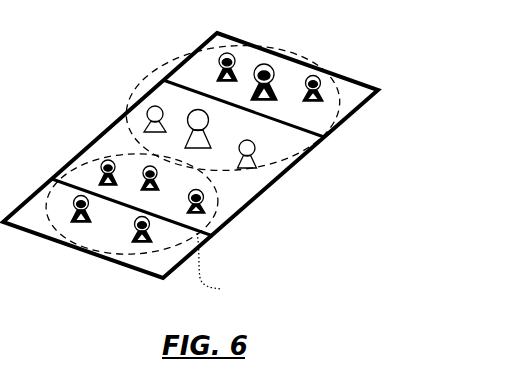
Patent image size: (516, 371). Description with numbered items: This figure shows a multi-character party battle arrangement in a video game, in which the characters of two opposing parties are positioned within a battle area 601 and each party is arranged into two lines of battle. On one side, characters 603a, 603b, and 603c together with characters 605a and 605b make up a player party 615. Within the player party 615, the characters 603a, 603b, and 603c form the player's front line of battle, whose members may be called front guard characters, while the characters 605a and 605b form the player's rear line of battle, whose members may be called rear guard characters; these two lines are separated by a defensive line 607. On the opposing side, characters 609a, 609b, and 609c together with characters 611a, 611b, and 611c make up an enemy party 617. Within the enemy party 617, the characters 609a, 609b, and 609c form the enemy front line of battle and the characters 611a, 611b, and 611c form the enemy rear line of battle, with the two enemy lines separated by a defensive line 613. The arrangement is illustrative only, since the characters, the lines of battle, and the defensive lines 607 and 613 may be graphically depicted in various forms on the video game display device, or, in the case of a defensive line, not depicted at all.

The battle area 601 is at (170, 270).
The character 603a is at (101, 181).
The character 603b is at (142, 170).
The character 603c is at (203, 210).
The character 605a is at (80, 220).
The character 605b is at (136, 240).
The defensive line 607 is at (213, 212).
The character 609a is at (255, 152).
The character 609b is at (198, 117).
The character 609c is at (147, 113).
The character 611a is at (325, 83).
The character 611b is at (266, 73).
The character 611c is at (223, 60).
The defensive line 613 is at (325, 133).
The player party 615 is at (226, 268).
The enemy party 617 is at (336, 90).